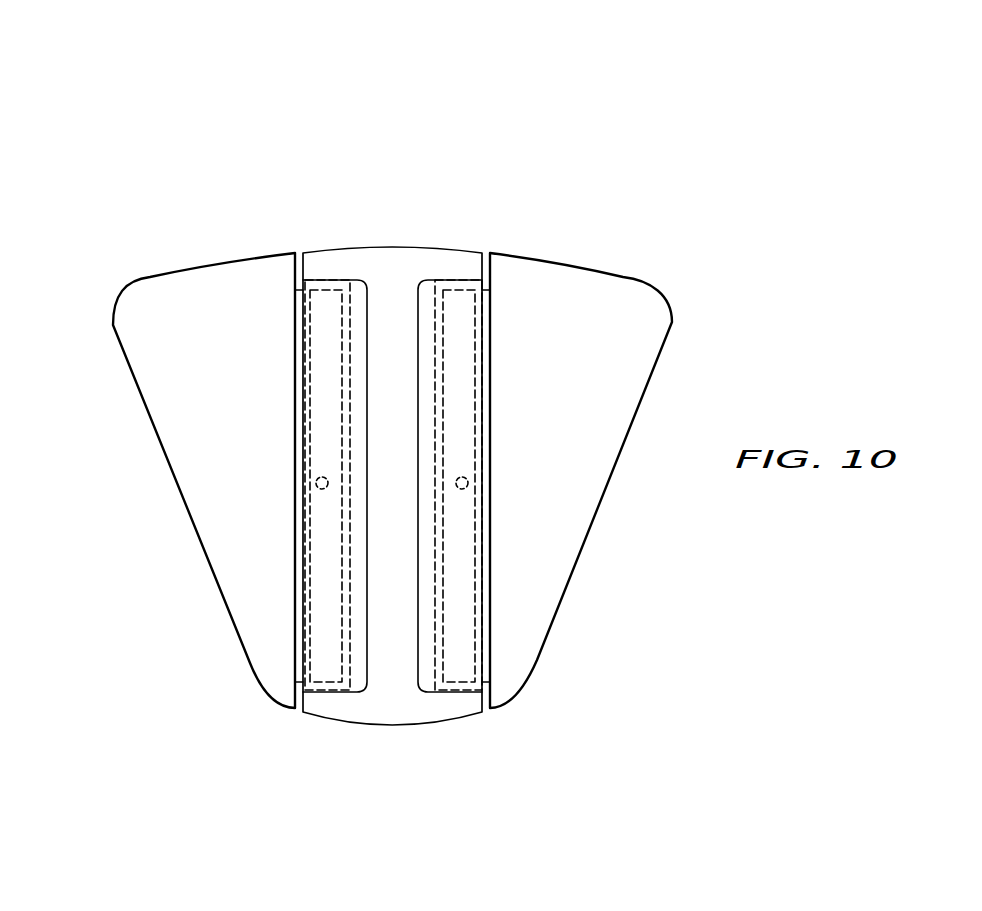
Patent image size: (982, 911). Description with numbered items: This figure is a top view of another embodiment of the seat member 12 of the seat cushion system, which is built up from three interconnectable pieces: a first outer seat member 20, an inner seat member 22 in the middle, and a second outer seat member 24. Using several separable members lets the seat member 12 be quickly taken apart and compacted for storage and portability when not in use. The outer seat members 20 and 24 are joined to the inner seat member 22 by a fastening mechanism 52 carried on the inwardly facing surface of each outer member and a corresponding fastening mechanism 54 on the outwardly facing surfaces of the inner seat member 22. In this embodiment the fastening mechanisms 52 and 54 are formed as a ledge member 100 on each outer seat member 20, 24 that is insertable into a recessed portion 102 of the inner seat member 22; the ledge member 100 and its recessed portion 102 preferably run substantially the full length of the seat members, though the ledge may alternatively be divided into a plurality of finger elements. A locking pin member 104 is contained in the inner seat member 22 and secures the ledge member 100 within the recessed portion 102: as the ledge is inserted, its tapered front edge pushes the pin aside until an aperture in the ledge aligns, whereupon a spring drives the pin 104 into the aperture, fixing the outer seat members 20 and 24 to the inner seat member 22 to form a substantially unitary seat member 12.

The seat member 12 is at (490, 115).
The first outer seat member 20 is at (177, 388).
The inner seat member 22 is at (393, 692).
The second outer seat member 24 is at (620, 328).
The fastening mechanism 52 is at (367, 528).
The fastening mechanism 54 is at (418, 446).
The ledge member 100 is at (338, 342).
The recessed portion 102 is at (330, 280).
The locking pin member 104 is at (315, 487).